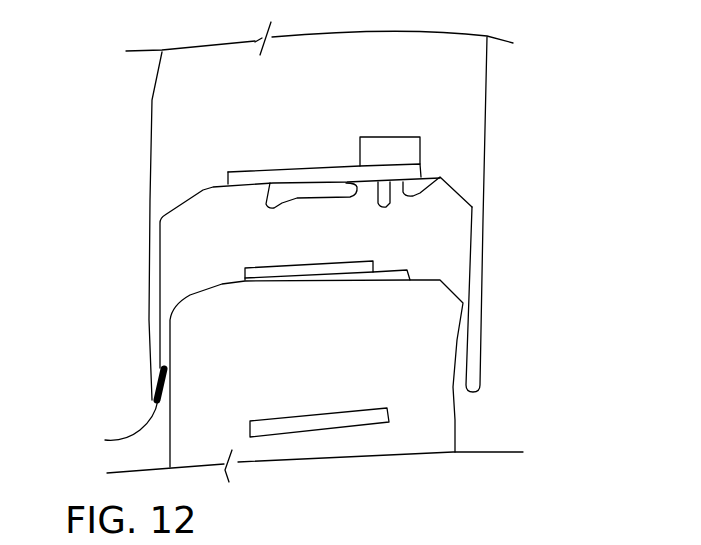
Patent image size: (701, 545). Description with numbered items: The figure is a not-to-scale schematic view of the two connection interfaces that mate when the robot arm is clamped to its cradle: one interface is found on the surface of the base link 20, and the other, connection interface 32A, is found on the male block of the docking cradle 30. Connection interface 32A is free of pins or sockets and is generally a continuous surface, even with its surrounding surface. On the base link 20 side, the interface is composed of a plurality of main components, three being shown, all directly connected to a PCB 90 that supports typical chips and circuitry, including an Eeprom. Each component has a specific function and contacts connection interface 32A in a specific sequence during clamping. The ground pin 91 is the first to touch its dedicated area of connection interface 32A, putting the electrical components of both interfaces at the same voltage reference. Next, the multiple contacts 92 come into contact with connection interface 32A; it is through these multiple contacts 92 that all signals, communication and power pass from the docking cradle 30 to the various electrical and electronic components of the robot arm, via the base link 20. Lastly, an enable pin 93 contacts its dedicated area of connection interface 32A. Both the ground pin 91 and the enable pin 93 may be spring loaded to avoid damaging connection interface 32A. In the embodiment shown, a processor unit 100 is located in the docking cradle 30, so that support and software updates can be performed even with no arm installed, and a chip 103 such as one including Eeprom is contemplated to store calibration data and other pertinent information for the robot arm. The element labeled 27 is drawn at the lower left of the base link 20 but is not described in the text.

The base link 20 is at (390, 105).
The PCB 90 is at (228, 172).
The multiple contacts 92 is at (291, 194).
The ground pin 91 is at (378, 203).
The enable pin 93 is at (440, 177).
The connection interface 32A is at (383, 270).
The docking cradle 30 is at (340, 372).
The hinge 27 is at (103, 409).
The processor unit 100 is at (340, 426).
The chip 103 is at (358, 468).